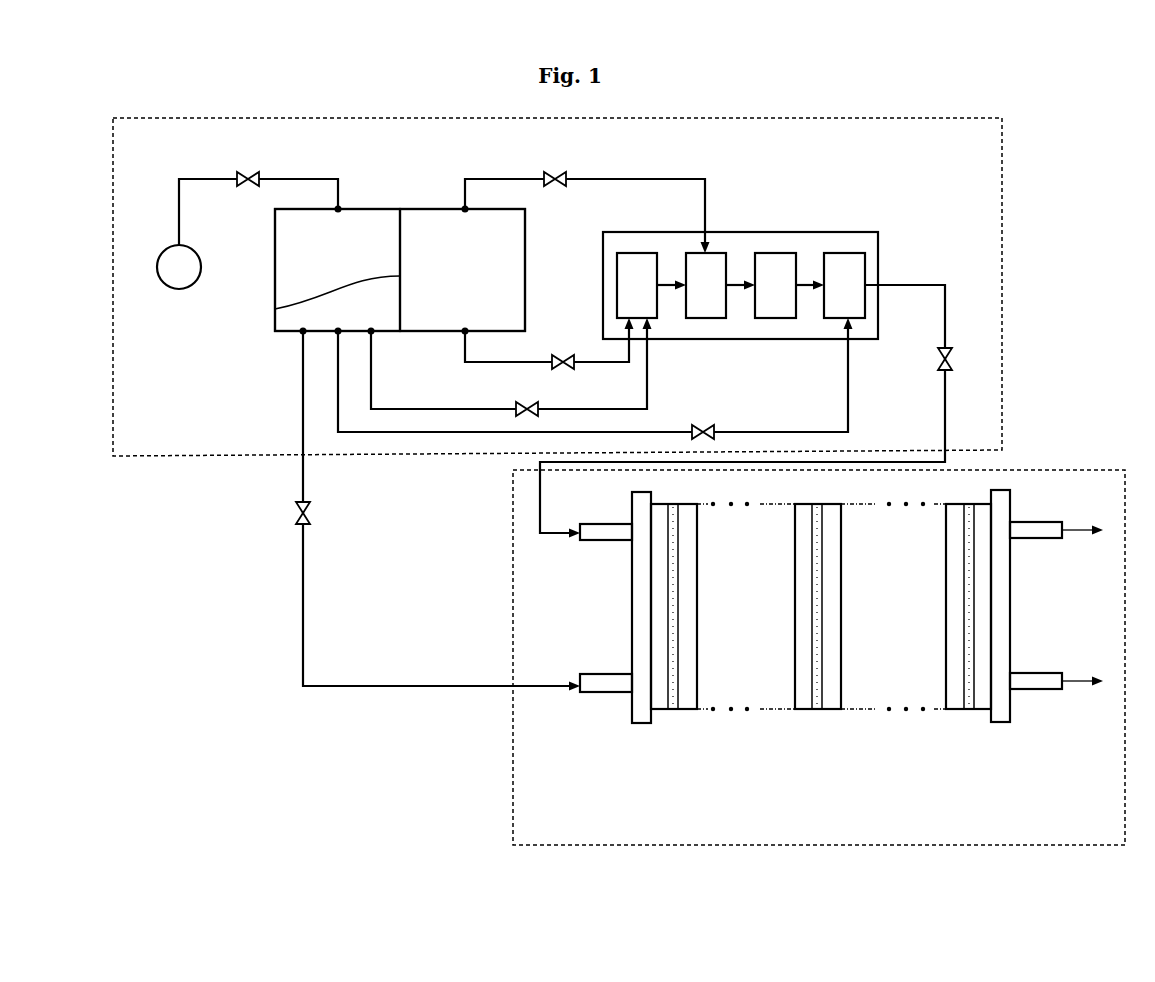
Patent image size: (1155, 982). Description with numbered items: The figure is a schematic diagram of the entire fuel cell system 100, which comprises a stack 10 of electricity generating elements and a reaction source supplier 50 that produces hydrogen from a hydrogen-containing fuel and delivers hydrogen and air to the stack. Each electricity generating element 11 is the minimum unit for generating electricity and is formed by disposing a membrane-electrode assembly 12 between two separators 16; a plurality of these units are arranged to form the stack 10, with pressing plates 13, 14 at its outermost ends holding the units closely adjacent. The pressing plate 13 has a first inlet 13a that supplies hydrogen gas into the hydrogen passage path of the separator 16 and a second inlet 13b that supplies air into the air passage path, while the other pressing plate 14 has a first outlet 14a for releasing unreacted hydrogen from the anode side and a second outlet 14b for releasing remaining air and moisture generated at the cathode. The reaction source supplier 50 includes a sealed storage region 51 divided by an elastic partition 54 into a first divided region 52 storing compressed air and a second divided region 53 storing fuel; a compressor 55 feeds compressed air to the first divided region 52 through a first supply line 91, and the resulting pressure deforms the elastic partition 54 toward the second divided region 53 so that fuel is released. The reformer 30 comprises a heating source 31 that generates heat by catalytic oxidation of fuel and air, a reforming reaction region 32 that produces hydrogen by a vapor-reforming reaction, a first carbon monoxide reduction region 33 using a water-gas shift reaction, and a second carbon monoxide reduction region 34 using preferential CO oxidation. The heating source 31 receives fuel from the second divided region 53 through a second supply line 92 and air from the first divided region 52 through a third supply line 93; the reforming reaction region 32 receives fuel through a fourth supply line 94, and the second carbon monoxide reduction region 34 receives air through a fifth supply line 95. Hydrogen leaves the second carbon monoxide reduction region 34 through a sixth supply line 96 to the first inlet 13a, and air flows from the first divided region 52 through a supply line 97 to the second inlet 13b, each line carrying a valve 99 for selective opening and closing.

The fuel cell system 100 is at (1041, 199).
The reaction source supplier 50 is at (197, 457).
The stack 10 is at (1056, 470).
The compressor 55 is at (158, 271).
The first supply line 91 is at (216, 178).
The valve 99 is at (252, 172).
The storage region 51 is at (363, 166).
The first divided region 52 is at (372, 209).
The second divided region 53 is at (430, 209).
The elastic partition 54 is at (275, 309).
The fourth supply line 94 is at (494, 178).
The reformer 30 is at (760, 232).
The heating source 31 is at (637, 253).
The reforming reaction region 32 is at (705, 318).
The first carbon monoxide reduction region 33 is at (773, 318).
The second carbon monoxide reduction region 34 is at (842, 253).
The second supply line 92 is at (556, 360).
The third supply line 93 is at (458, 409).
The fifth supply line 95 is at (772, 432).
The sixth supply line 96 is at (948, 326).
The supply line 97 is at (307, 571).
The pressing plate 13 is at (642, 723).
The first inlet 13a is at (598, 524).
The second inlet 13b is at (594, 692).
The pressing plate 14 is at (1000, 722).
The first outlet 14a is at (1040, 689).
The second outlet 14b is at (1040, 522).
The electricity generating element 11 is at (806, 672).
The membrane-electrode assembly 12 is at (817, 709).
The separator 16 is at (803, 709).